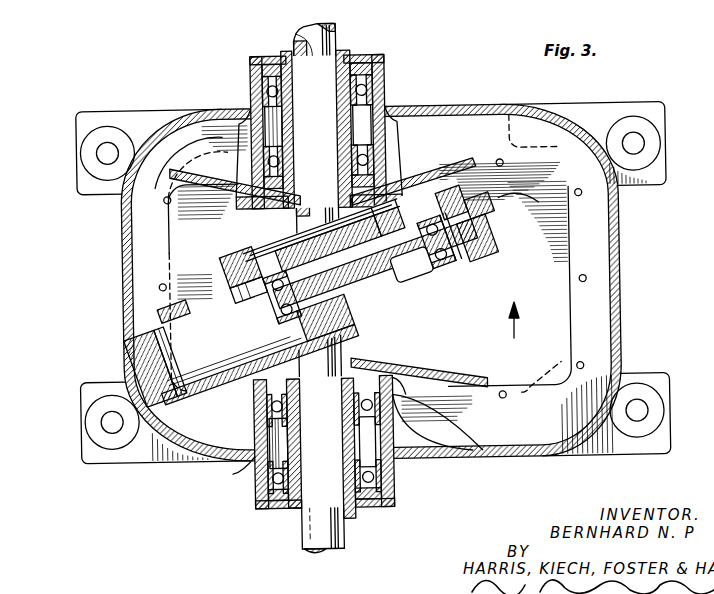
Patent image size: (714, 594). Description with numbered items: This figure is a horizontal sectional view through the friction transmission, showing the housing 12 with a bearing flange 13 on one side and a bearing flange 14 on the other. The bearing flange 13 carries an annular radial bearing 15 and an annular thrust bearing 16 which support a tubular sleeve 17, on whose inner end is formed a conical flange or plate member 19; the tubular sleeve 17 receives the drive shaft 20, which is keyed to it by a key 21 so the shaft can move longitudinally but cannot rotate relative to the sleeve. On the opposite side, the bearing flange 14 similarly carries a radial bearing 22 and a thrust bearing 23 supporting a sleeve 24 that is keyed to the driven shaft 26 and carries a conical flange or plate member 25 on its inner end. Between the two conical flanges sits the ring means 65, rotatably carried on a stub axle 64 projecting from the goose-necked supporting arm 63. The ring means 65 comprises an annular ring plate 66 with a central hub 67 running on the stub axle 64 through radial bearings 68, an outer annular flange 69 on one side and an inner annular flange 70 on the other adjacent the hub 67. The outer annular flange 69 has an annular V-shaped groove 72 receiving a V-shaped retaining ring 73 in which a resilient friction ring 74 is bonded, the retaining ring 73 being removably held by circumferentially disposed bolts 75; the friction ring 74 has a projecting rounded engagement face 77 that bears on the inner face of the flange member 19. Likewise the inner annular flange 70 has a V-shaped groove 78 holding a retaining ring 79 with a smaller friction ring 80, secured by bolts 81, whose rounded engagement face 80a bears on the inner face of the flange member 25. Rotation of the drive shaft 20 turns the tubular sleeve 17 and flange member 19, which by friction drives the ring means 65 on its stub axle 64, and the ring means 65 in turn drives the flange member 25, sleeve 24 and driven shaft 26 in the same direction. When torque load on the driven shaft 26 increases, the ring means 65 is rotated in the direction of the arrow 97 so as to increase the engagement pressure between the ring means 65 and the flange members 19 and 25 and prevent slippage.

The housing 12 is at (467, 103).
The bearing flange 13 is at (392, 484).
The bearing flange 14 is at (388, 80).
The annular radial bearing 15 is at (262, 485).
The annular thrust bearing 16 is at (402, 410).
The tubular sleeve 17 is at (278, 507).
The conical flange or plate member 19 is at (418, 368).
The drive shaft 20 is at (350, 530).
The key 21 is at (304, 520).
The radial bearing 22 is at (263, 82).
The thrust bearing 23 is at (370, 162).
The sleeve 24 is at (348, 52).
The conical flange or plate member 25 is at (440, 176).
The driven shaft 26 is at (336, 30).
The supporting arm 63 is at (356, 326).
The stub axle 64 is at (310, 240).
The ring means 65 is at (521, 196).
The annular ring plate 66 is at (446, 236).
The central hub 67 is at (430, 282).
The radial bearings 68 is at (232, 301).
The outer annular flange 69 is at (150, 362).
The inner annular flange 70 is at (250, 285).
The annular V-shaped groove 72 is at (500, 266).
The annular V-shaped retaining ring 73 is at (470, 284).
The annular friction ring 74 is at (506, 276).
The bolts 75 is at (166, 346).
The engagement face 77 is at (500, 278).
The annular V-shaped groove 78 is at (390, 225).
The retaining ring 79 is at (395, 211).
The friction ring 80 is at (236, 262).
The engagement face 80a is at (240, 266).
The bolts 81 is at (406, 263).
The arrow 97 is at (516, 334).